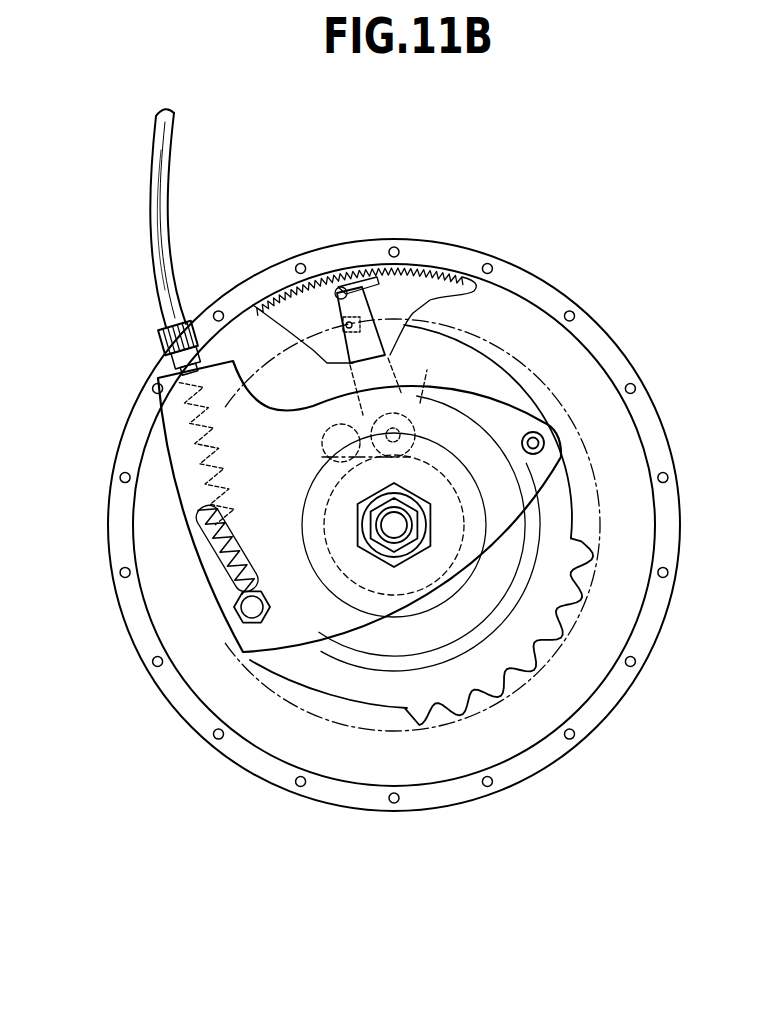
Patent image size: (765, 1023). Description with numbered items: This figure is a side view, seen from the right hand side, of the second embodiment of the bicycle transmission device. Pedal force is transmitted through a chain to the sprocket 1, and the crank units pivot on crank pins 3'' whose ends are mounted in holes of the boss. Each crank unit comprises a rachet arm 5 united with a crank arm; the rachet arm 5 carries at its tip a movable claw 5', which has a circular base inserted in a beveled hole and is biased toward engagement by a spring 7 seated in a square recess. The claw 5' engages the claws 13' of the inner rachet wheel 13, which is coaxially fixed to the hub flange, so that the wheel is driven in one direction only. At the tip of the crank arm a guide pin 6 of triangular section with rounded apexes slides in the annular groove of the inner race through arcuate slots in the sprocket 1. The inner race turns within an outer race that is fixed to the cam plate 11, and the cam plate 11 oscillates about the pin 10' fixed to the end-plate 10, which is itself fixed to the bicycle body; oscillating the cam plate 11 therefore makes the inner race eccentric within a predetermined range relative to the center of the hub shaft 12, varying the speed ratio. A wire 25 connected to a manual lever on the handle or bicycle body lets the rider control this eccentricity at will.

The sprocket 1 is at (555, 654).
The crank pin 3'' is at (436, 373).
The rachet arm 5 is at (351, 351).
The movable claw 5' is at (357, 241).
The guide pin 6 is at (325, 440).
The spring 7 is at (298, 266).
The end-plate 10 is at (396, 506).
The pin 10' is at (558, 411).
The cam plate 11 is at (347, 657).
The hub shaft 12 is at (400, 530).
The inner rachet wheel 13 is at (388, 277).
The claws 13' is at (360, 251).
The wire 25 is at (237, 550).